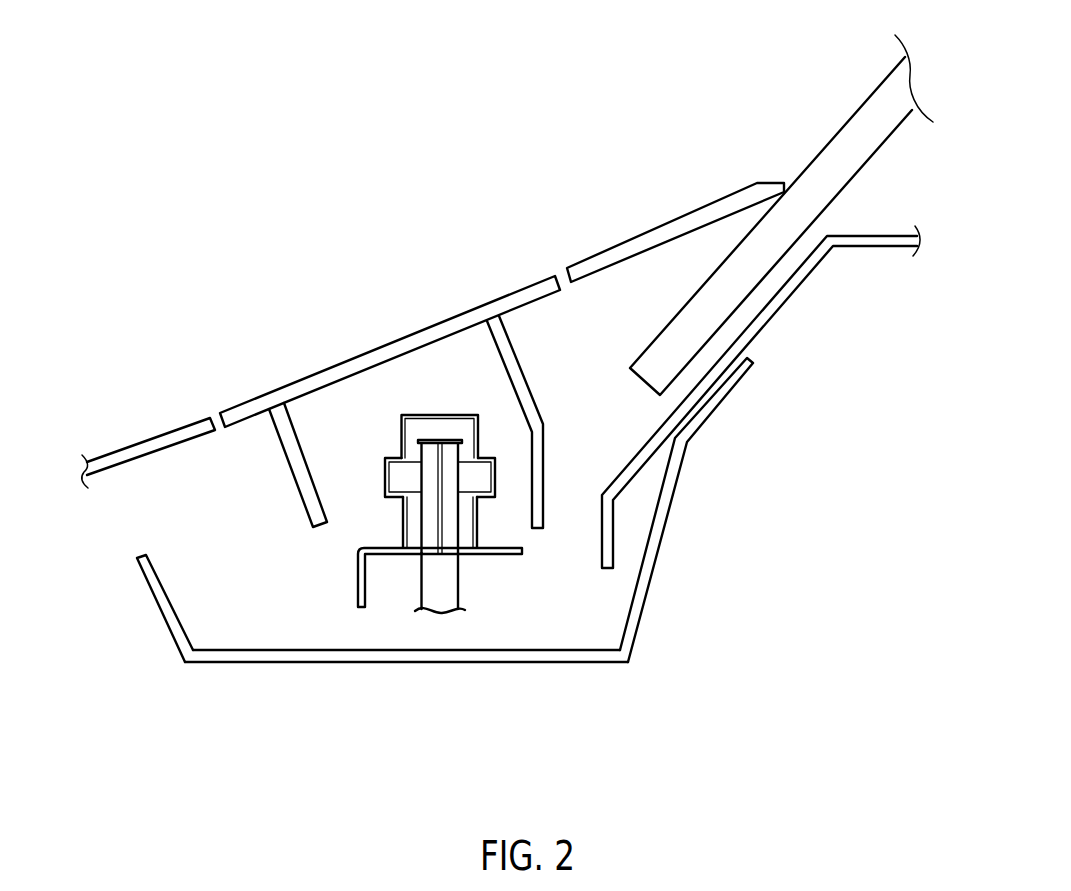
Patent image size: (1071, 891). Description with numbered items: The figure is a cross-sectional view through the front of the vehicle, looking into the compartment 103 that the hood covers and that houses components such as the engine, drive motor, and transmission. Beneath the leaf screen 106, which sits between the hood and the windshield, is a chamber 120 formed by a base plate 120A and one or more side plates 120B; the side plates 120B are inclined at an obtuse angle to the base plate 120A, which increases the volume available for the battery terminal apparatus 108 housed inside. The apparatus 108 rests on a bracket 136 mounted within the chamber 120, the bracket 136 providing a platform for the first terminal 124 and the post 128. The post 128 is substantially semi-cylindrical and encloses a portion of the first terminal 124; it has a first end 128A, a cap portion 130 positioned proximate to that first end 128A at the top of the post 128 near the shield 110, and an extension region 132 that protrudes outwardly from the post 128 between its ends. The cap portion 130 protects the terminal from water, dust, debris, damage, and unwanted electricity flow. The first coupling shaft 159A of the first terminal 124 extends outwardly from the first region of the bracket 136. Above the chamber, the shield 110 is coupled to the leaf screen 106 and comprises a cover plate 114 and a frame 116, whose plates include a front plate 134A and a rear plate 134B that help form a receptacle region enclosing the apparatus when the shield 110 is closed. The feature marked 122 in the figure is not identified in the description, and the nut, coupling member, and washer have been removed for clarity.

The compartment 103 is at (118, 521).
The leaf screen 106 is at (135, 443).
The battery terminal apparatus 108 is at (460, 300).
The shield 110 is at (373, 340).
The cover plate 114 is at (372, 342).
The frame 116 is at (500, 355).
The chamber 120 is at (521, 636).
The base plate 120A is at (413, 648).
The side plate 120B is at (675, 497).
The gap 122 is at (561, 265).
The first terminal 124 is at (428, 512).
The post 128 is at (403, 527).
The first end 128A is at (397, 415).
The cap portion 130 is at (448, 412).
The extension region 132 is at (493, 477).
The front plate 134A is at (520, 363).
The rear plate 134B is at (277, 462).
The bracket 136 is at (480, 556).
The first coupling shaft 159A is at (450, 587).